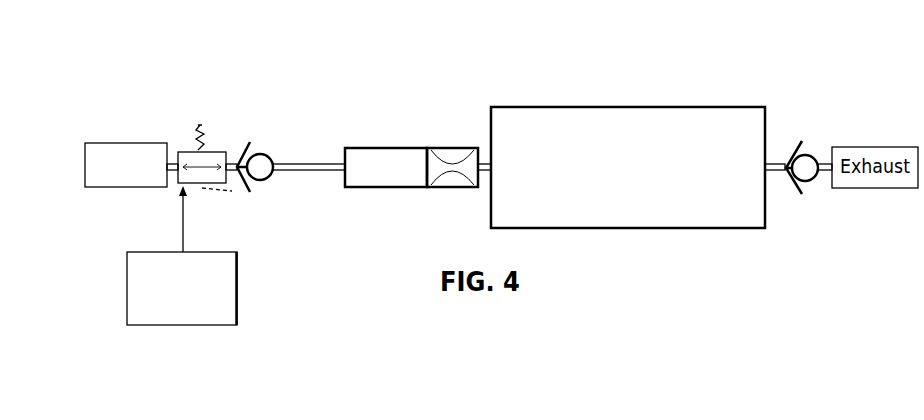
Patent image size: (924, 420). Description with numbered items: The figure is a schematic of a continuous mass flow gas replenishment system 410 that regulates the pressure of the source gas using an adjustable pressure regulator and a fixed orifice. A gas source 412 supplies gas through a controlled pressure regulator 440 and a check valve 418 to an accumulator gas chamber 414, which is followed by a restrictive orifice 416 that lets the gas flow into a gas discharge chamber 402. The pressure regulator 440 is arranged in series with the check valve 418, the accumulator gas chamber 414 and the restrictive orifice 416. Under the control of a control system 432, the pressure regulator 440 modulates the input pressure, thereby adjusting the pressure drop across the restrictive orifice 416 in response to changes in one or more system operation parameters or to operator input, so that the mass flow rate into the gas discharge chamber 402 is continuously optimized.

The gas discharge chamber 402 is at (558, 106).
The continuous mass flow gas replenishment system 410 is at (201, 75).
The gas source 412 is at (101, 143).
The accumulator gas chamber 414 is at (378, 148).
The restrictive orifice 416 is at (440, 148).
The check valve 418 is at (262, 154).
The control system 432 is at (237, 302).
The controlled pressure regulator 440 is at (178, 152).